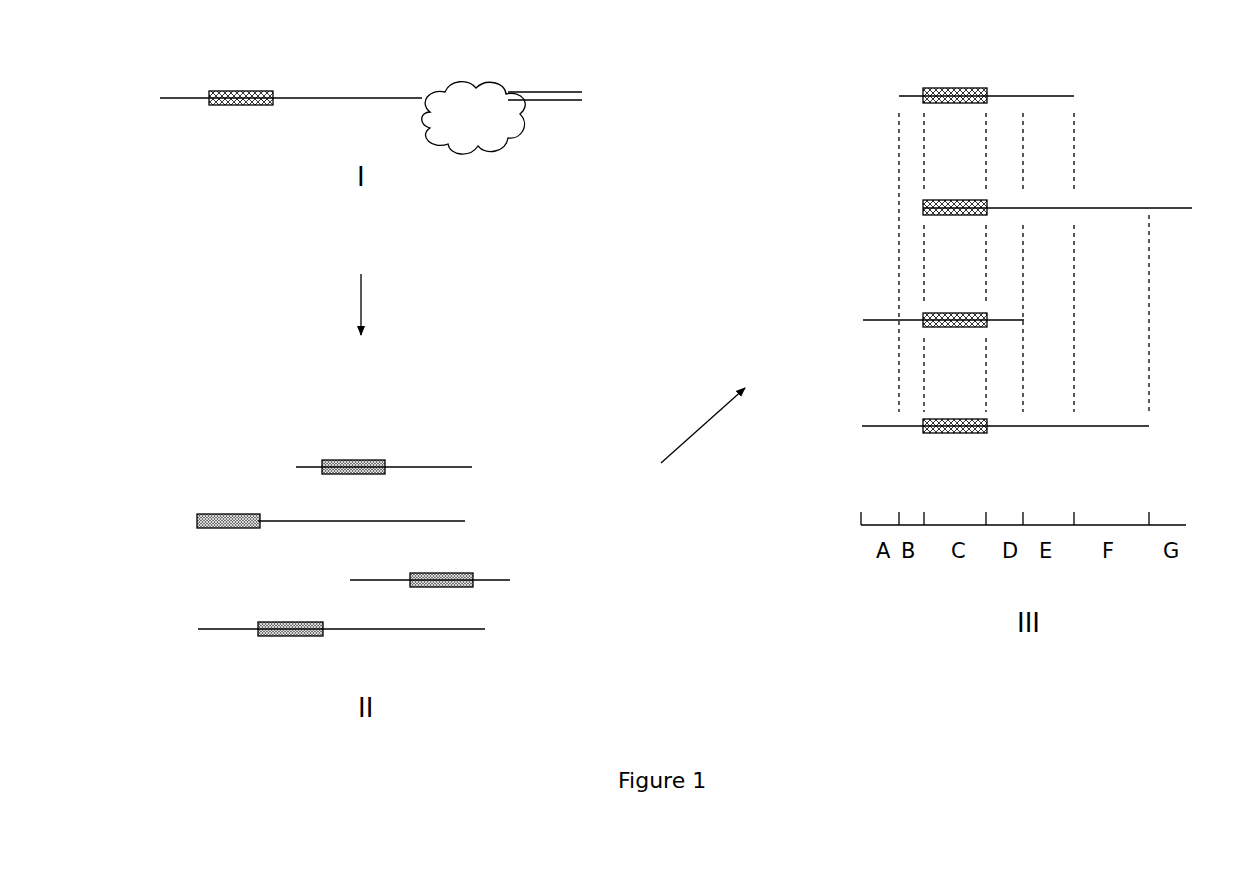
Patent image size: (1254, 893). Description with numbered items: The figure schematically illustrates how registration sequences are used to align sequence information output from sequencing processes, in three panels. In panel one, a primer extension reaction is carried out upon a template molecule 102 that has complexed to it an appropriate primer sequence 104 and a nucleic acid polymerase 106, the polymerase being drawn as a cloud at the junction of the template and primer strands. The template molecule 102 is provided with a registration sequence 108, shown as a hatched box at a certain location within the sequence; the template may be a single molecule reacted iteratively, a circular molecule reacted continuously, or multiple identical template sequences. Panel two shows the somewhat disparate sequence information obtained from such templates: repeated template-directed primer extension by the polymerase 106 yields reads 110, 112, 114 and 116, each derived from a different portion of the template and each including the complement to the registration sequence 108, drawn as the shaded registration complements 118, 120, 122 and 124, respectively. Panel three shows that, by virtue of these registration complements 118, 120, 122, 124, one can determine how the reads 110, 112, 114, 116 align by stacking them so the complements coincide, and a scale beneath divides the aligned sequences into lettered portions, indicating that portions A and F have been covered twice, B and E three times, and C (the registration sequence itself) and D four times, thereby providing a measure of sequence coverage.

The template molecule 102 is at (572, 112).
The primer sequence 104 is at (572, 88).
The nucleic acid polymerase 106 is at (474, 118).
The registration sequence 108 is at (220, 87).
The sequence read 110 is at (407, 469).
The sequence read 112 is at (387, 523).
The sequence read 114 is at (451, 583).
The sequence read 116 is at (363, 632).
The registration complement 118 is at (345, 459).
The registration complement 120 is at (210, 511).
The registration complement 122 is at (408, 573).
The registration complement 124 is at (272, 621).